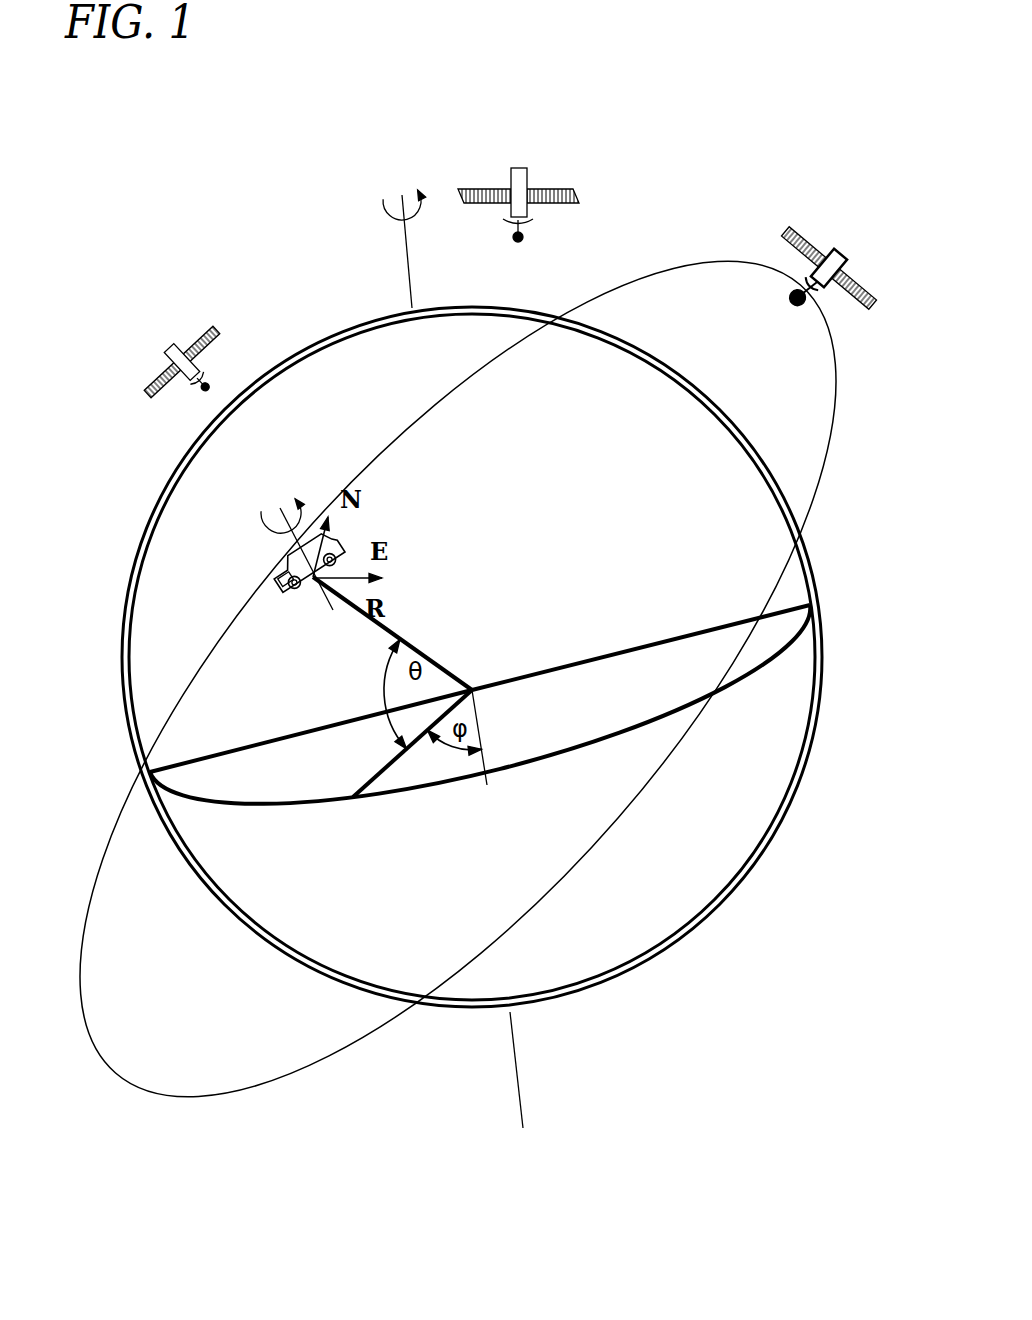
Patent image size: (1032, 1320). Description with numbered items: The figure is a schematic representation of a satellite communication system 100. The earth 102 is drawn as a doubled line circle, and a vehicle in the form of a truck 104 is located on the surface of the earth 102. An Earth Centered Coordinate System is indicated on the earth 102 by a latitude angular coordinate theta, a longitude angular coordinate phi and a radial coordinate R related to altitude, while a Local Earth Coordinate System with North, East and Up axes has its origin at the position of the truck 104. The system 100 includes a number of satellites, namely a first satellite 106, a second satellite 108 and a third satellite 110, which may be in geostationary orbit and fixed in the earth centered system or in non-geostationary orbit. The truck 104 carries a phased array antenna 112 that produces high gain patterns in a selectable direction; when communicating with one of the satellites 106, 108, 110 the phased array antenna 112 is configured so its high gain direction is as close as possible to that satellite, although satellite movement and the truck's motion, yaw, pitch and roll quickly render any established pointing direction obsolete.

The satellite communication system 100 is at (442, 1252).
The earth 102 is at (137, 553).
The truck 104 is at (275, 586).
The first satellite 106 is at (215, 332).
The second satellite 108 is at (573, 202).
The third satellite 110 is at (798, 236).
The phased array antenna 112 is at (300, 544).